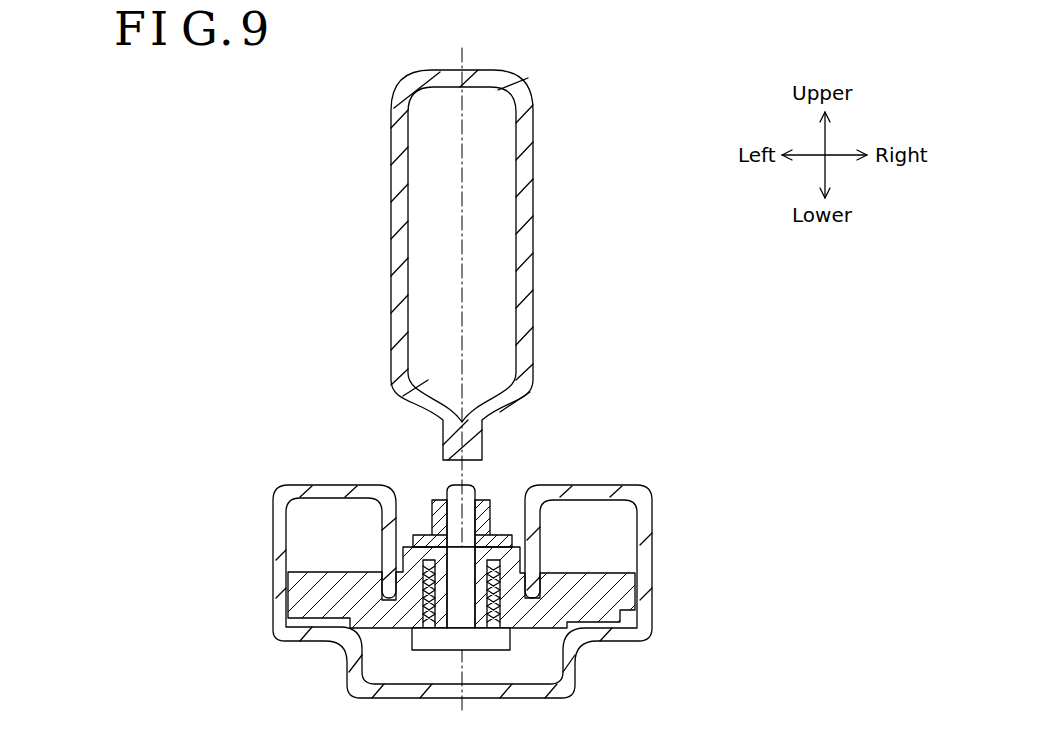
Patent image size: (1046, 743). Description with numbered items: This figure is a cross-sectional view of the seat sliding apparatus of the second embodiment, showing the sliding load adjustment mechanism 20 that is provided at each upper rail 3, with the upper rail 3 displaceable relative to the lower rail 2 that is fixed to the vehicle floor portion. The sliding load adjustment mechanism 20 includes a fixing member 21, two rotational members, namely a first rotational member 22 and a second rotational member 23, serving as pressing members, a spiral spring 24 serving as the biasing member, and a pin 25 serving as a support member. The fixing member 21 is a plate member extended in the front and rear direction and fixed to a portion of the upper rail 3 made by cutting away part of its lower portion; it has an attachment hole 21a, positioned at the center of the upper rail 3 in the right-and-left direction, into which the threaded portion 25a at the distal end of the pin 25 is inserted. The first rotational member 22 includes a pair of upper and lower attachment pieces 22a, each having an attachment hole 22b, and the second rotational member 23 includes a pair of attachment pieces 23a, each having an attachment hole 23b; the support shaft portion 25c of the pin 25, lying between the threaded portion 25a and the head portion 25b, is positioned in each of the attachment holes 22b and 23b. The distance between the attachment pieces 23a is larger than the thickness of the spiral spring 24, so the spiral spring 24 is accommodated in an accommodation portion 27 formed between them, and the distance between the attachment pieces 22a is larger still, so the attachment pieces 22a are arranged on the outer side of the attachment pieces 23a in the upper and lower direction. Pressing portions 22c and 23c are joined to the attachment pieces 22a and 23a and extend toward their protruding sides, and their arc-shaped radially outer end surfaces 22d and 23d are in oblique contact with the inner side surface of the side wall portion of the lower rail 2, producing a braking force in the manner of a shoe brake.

The sliding load adjustment mechanism 20 is at (459, 265).
The upper rail 3 is at (534, 188).
The lower rail 2 is at (652, 540).
The first rotational member 22 is at (344, 645).
The attachment pieces 22a is at (526, 560).
The attachment hole 22b is at (472, 650).
The pressing portion 22c is at (330, 570).
The end surface 22d is at (272, 602).
The second rotational member 23 is at (447, 619).
The attachment pieces 23a is at (300, 590).
The attachment hole 23b is at (431, 565).
The pressing portion 23c is at (637, 572).
The end surface 23d is at (645, 603).
The spiral spring 24 is at (527, 598).
The pin 25 is at (448, 580).
The threaded portion 25a is at (478, 490).
The head portion 25b is at (440, 650).
The support shaft portion 25c is at (462, 628).
The fixing member 21 is at (495, 535).
The attachment hole 21a is at (440, 530).
The accommodation portion 27 is at (222, 550).